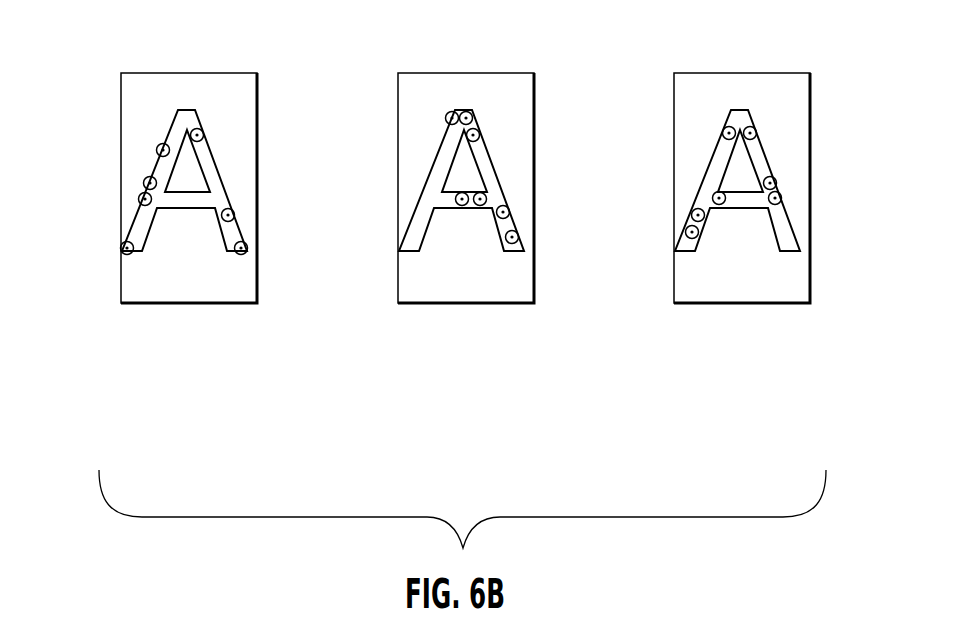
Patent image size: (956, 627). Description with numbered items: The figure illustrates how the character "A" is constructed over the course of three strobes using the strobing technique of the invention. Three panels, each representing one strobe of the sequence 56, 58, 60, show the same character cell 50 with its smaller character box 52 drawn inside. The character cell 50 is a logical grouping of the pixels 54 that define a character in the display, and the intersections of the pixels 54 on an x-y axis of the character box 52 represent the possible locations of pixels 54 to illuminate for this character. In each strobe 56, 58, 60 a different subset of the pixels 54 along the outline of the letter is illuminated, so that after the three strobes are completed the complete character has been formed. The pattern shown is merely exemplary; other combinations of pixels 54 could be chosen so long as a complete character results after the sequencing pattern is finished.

The character cell 50 is at (98, 215).
The character box 52 is at (242, 105).
The pixels 54 is at (203, 137).
The first display state 56 is at (195, 335).
The second display state 58 is at (472, 335).
The third display state 60 is at (748, 335).